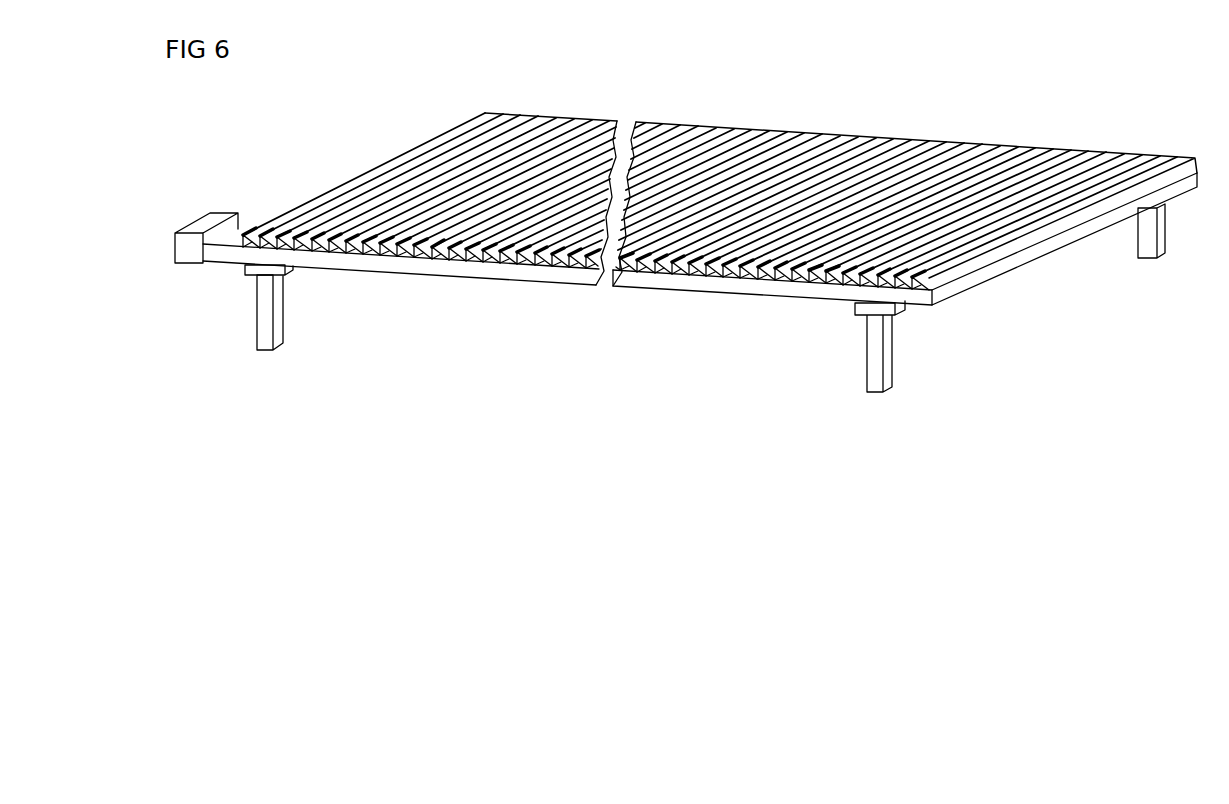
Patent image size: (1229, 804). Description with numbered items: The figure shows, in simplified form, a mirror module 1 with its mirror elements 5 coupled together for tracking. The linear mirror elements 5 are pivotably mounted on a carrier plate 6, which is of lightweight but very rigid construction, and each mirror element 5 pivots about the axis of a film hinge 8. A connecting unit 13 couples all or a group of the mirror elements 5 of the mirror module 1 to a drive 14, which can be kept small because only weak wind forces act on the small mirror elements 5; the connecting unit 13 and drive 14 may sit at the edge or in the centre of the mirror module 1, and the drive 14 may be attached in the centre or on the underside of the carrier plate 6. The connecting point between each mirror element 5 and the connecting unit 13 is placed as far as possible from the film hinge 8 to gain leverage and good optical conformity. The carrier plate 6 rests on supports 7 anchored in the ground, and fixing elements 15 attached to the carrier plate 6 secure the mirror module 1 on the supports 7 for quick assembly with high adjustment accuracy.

The mirror module 1 is at (700, 297).
The mirror element 5 is at (522, 275).
The carrier plate 6 is at (700, 301).
The support 7 is at (278, 337).
The film hinge 8 is at (797, 286).
The connecting unit 13 is at (673, 278).
The drive 14 is at (183, 253).
The fixing element 15 is at (278, 270).